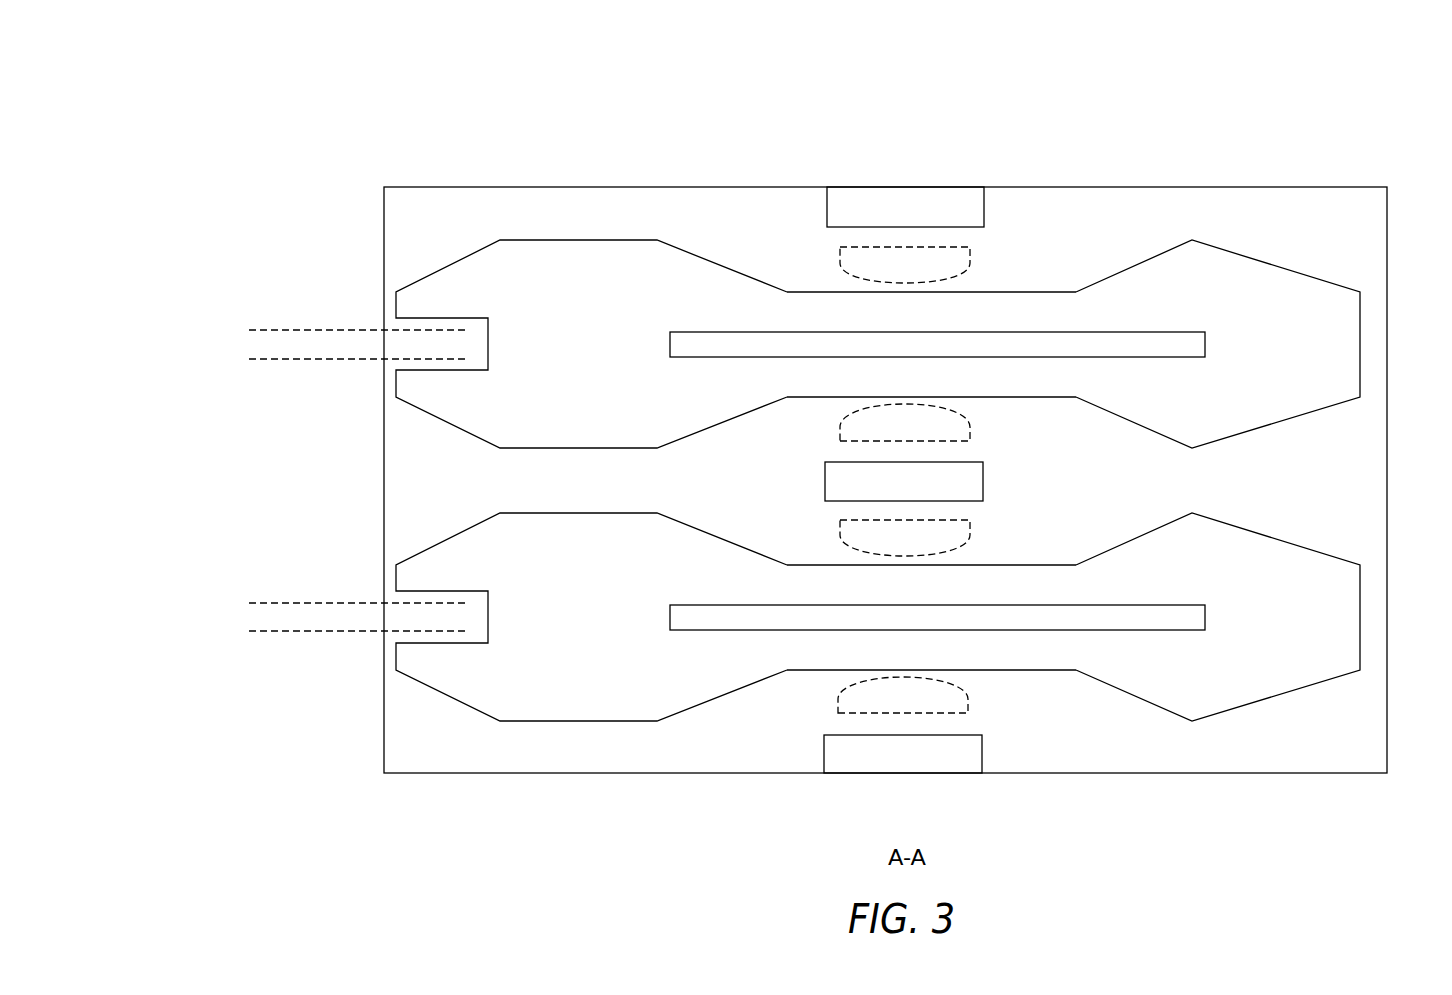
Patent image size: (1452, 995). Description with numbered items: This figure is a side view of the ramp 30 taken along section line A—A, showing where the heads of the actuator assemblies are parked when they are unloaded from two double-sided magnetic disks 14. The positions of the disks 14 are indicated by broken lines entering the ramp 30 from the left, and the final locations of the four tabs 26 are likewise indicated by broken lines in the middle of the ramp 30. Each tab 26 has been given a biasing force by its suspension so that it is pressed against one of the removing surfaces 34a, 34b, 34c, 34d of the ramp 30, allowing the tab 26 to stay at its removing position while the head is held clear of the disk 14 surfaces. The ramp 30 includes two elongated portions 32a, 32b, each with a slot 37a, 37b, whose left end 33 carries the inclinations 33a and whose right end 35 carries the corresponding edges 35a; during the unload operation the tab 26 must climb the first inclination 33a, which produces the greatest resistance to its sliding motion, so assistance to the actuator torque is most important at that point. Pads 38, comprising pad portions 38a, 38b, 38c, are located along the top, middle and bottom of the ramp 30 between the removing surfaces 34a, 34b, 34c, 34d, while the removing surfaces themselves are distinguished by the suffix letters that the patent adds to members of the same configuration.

The magnetic disk 14 is at (333, 601).
The tab 26 is at (840, 258).
The ramp 30 is at (1180, 802).
The first electrode 32a is at (1360, 355).
The second electrode 32b is at (1360, 637).
The left end portion 33 is at (470, 118).
The inclination 33a is at (687, 252).
The removing surface 34a is at (1045, 291).
The removing surface 34b is at (1040, 398).
The removing surface 34c is at (1028, 565).
The removing surface 34d is at (1037, 670).
The right end portion 35 is at (1214, 108).
The right end edges 35a is at (1158, 253).
The first slot 37a is at (682, 358).
The second slot 37b is at (682, 631).
The pads 38 is at (965, 145).
The first pad 38a is at (860, 195).
The second pad 38b is at (830, 490).
The third pad 38c is at (855, 765).